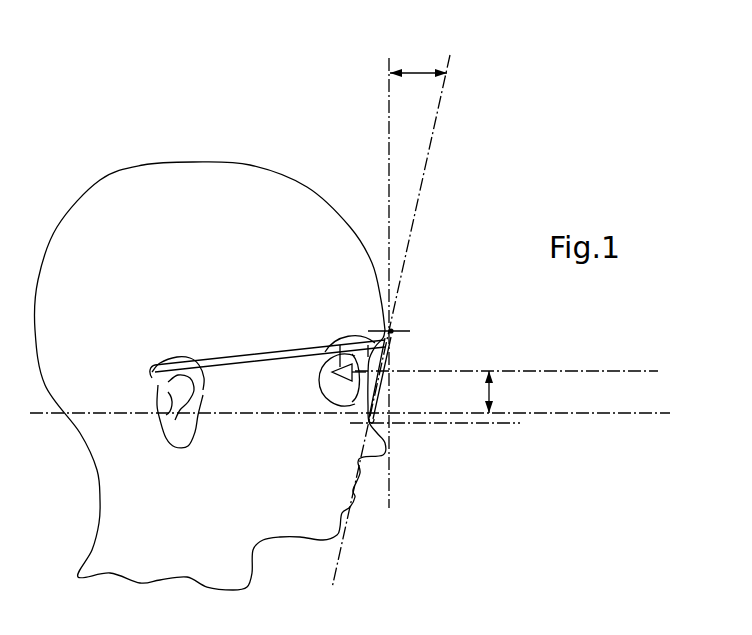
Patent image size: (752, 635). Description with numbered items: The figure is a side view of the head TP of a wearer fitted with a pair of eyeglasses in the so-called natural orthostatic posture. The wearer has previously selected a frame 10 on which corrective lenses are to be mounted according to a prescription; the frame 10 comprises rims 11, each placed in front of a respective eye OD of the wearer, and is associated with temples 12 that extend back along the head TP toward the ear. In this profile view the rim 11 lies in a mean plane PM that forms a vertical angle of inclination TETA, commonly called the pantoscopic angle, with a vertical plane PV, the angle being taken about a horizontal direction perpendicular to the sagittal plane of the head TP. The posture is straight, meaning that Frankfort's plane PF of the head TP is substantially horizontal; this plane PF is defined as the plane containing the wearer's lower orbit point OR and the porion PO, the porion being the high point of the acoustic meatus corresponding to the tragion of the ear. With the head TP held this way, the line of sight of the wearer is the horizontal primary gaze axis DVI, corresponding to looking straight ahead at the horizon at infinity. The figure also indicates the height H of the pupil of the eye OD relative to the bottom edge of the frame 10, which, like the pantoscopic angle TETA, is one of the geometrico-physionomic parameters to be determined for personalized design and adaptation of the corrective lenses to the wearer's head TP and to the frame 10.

The frame 10 is at (401, 319).
The rim 11 is at (386, 383).
The temple 12 is at (245, 353).
The wearer's head TP is at (203, 152).
The porion PO is at (172, 392).
The eye OD is at (340, 345).
The lower orbit point OR is at (342, 406).
The vertical plane PV is at (391, 490).
The mean plane PM is at (433, 145).
The vertical angle of inclination TETA is at (425, 72).
The horizontal primary gaze axis DVI is at (628, 371).
The Frankfort's plane PF is at (556, 413).
The height of the pupils H is at (489, 392).